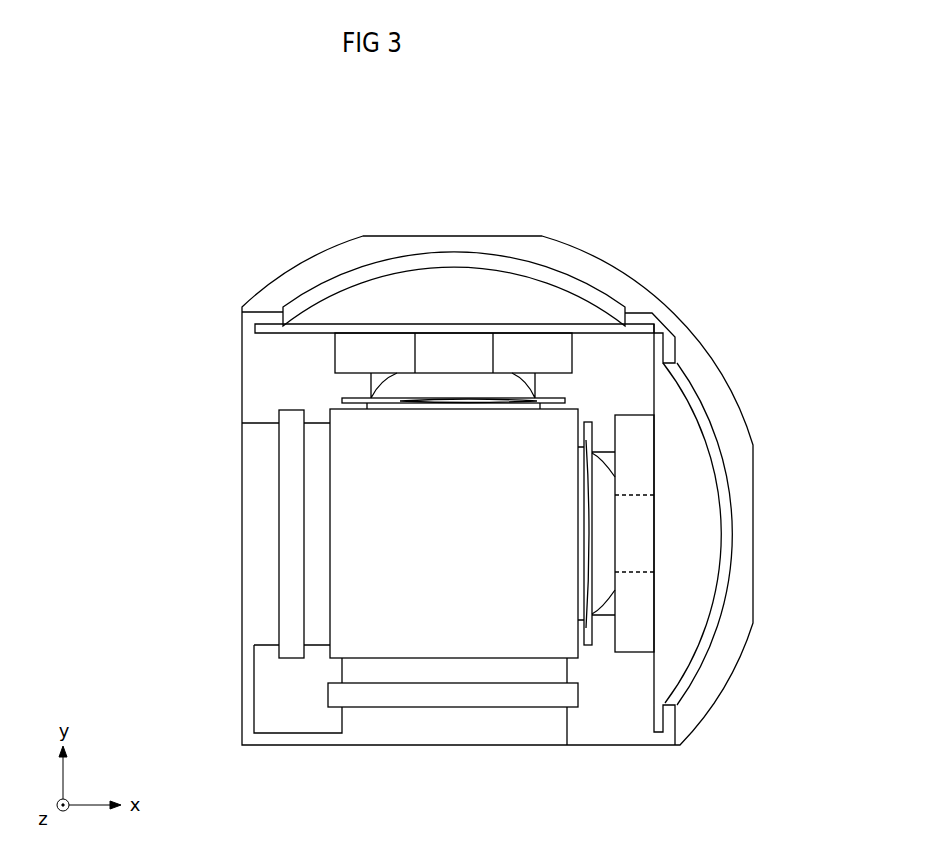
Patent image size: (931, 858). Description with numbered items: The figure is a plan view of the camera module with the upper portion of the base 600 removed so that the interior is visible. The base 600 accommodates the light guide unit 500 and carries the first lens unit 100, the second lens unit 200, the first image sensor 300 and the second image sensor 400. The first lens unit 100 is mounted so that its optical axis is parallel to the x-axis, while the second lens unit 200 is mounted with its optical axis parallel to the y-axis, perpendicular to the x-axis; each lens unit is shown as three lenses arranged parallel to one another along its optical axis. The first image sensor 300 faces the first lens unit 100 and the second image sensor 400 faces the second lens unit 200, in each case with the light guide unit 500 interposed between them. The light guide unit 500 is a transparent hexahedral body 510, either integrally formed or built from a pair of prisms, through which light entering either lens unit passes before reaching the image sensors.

The first lens unit 100 is at (607, 563).
The second lens unit 200 is at (480, 380).
The first image sensor 300 is at (286, 536).
The second image sensor 400 is at (448, 698).
The light guide unit 500 is at (454, 606).
The hexahedral body 510 is at (530, 637).
The base 600 is at (630, 290).